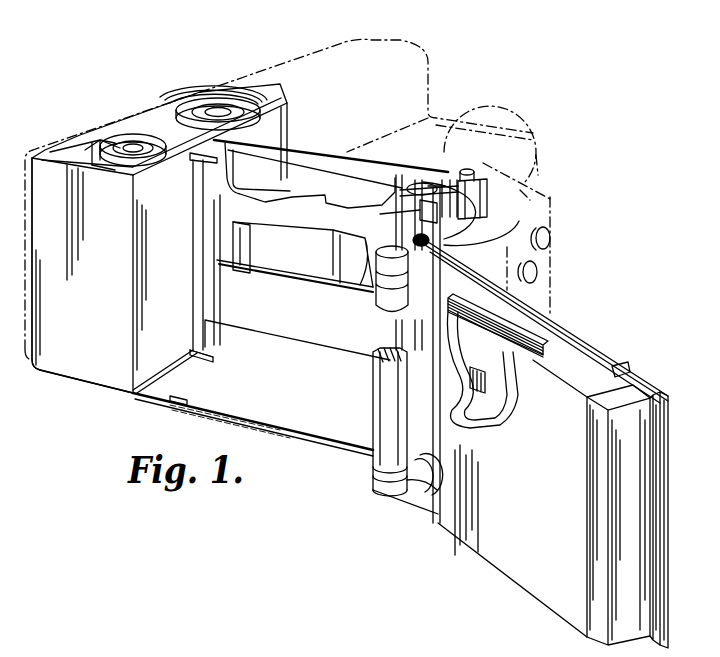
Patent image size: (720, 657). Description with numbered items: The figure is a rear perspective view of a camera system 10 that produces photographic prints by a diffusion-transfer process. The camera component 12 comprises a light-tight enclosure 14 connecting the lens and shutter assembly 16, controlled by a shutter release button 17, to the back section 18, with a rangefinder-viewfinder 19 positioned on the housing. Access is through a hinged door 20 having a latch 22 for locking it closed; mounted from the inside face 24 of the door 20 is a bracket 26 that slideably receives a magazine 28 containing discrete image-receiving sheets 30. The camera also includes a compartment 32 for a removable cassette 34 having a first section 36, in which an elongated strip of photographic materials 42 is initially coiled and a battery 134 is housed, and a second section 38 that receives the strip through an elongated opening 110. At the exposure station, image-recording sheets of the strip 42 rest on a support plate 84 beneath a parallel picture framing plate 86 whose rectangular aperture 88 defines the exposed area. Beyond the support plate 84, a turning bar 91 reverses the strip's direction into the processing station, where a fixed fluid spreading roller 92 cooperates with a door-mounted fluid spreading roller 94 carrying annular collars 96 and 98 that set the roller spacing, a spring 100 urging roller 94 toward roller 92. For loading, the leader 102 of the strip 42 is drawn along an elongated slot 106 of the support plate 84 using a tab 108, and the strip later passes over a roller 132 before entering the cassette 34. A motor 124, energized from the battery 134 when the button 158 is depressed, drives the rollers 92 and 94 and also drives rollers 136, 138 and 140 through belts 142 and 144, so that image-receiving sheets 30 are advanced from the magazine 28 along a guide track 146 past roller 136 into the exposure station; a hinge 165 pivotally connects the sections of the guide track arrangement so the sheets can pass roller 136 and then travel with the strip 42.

The camera system 10 is at (110, 108).
The camera component 12 is at (555, 207).
The light-tight enclosure 14 is at (540, 150).
The lens and shutter assembly 16 is at (537, 137).
The shutter release button 17 is at (550, 236).
The back section 18 is at (550, 252).
The rangefinder-viewfinder 19 is at (380, 47).
The hinged door 20 is at (669, 410).
The latch 22 is at (618, 365).
The inside face 24 is at (655, 450).
The bracket 26 is at (550, 597).
The magazine 28 is at (632, 512).
The image-receiving sheets 30 is at (530, 335).
The compartment 32 is at (57, 141).
The cassette 34 is at (289, 120).
The first section 36 is at (143, 117).
The second section 38 is at (91, 142).
The elongated strip of photographic materials 42 is at (242, 98).
The support plate 84 is at (318, 327).
The picture framing plate 86 is at (343, 170).
The rectangular aperture 88 is at (300, 165).
The turning bar 91 is at (451, 180).
The fluid spreading roller 92 is at (401, 176).
The fluid spreading roller 94 is at (375, 416).
The annular collar 96 is at (372, 460).
The annular collar 98 is at (380, 312).
The spring 100 is at (418, 481).
The leader 102 is at (353, 262).
The elongated slot 106 is at (300, 283).
The tab 108 is at (248, 273).
The elongated opening 110 is at (198, 358).
The motor 124 is at (515, 205).
The roller 132 is at (206, 340).
The battery 134 is at (200, 100).
The roller 136 is at (470, 172).
The roller 138 is at (432, 245).
The roller 140 is at (518, 366).
The belt 142 is at (395, 212).
The belt 144 is at (483, 280).
The guide track 146 is at (522, 214).
The button 158 is at (538, 275).
The hinge 165 is at (482, 200).